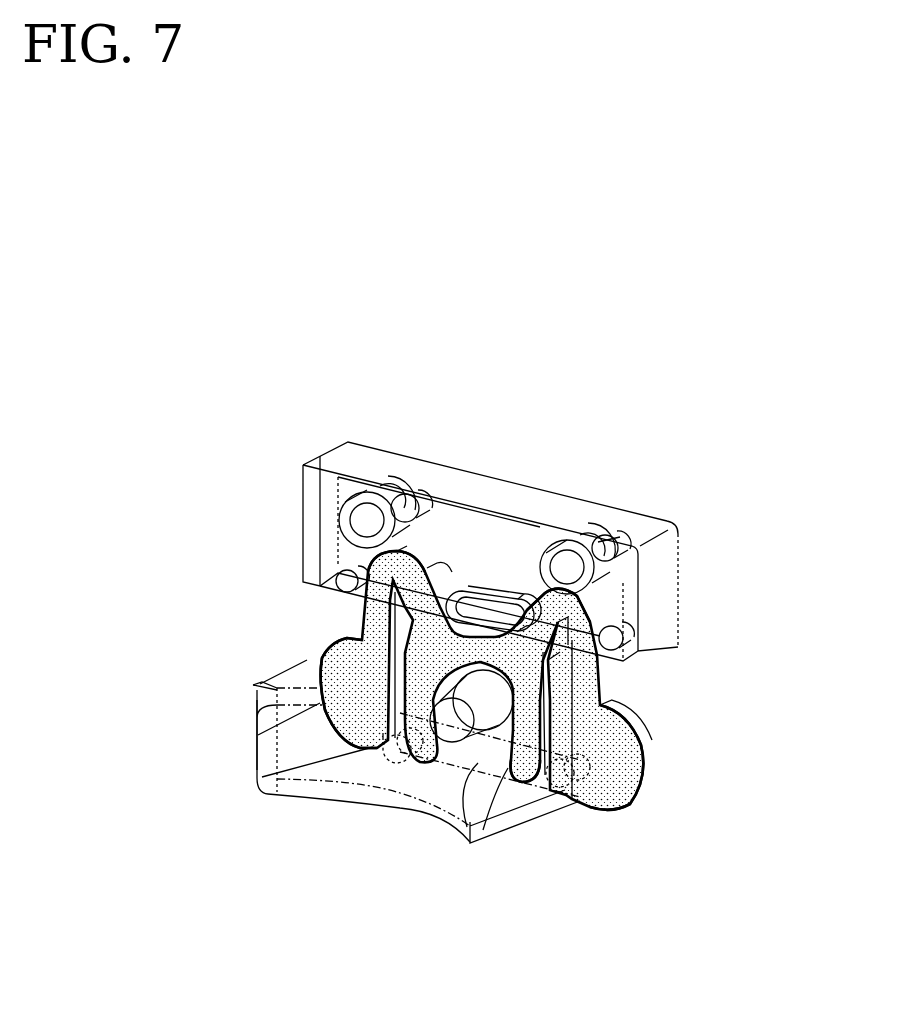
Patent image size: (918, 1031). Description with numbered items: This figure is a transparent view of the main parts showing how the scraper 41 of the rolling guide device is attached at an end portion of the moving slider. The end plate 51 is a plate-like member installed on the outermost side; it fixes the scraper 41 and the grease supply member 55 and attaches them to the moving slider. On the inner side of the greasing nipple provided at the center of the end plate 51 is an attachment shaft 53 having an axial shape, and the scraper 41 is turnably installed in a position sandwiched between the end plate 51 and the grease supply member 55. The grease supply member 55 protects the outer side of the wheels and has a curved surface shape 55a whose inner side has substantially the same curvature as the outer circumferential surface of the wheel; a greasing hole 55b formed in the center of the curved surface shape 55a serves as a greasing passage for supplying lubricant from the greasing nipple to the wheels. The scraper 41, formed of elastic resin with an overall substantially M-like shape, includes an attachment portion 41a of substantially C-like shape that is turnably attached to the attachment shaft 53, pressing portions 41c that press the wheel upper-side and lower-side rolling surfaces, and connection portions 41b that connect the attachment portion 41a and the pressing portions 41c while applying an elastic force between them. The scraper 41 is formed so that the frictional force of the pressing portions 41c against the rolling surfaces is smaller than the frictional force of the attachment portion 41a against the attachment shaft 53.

The scraper 41 is at (484, 637).
The attachment portion 41a is at (532, 785).
The connection portions 41b is at (423, 560).
The pressing portions 41c is at (323, 663).
The end plate 51 is at (572, 508).
The attachment shaft 53 is at (490, 715).
The grease supply member 55 is at (510, 828).
The curved surface shape 55a is at (315, 746).
The greasing hole 55b is at (384, 734).